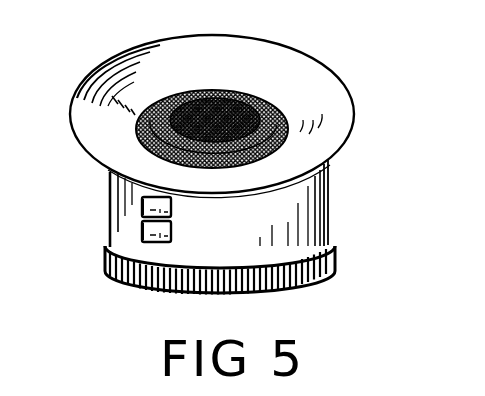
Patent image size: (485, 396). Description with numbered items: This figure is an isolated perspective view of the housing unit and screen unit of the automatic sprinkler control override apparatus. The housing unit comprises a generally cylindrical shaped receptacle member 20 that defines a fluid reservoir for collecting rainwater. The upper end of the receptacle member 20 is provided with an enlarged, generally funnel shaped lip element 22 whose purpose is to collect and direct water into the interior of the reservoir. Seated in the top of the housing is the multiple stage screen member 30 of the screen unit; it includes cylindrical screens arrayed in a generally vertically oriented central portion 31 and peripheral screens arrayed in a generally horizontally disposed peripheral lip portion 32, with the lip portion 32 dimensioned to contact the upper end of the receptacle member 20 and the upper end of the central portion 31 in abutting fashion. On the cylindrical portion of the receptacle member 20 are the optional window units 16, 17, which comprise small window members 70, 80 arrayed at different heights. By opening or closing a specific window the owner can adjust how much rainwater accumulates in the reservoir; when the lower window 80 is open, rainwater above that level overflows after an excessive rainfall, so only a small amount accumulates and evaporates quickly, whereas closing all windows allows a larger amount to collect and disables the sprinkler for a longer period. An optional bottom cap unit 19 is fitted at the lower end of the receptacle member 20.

The window unit 16 is at (138, 201).
The window unit 17 is at (138, 227).
The bottom cap unit 19 is at (103, 261).
The receptacle member 20 is at (241, 232).
The lip element 22 is at (190, 84).
The screen member 30 is at (258, 90).
The central portion 31 is at (270, 103).
The peripheral lip portion 32 is at (133, 116).
The window member 70 is at (171, 210).
The lower window member 80 is at (163, 242).